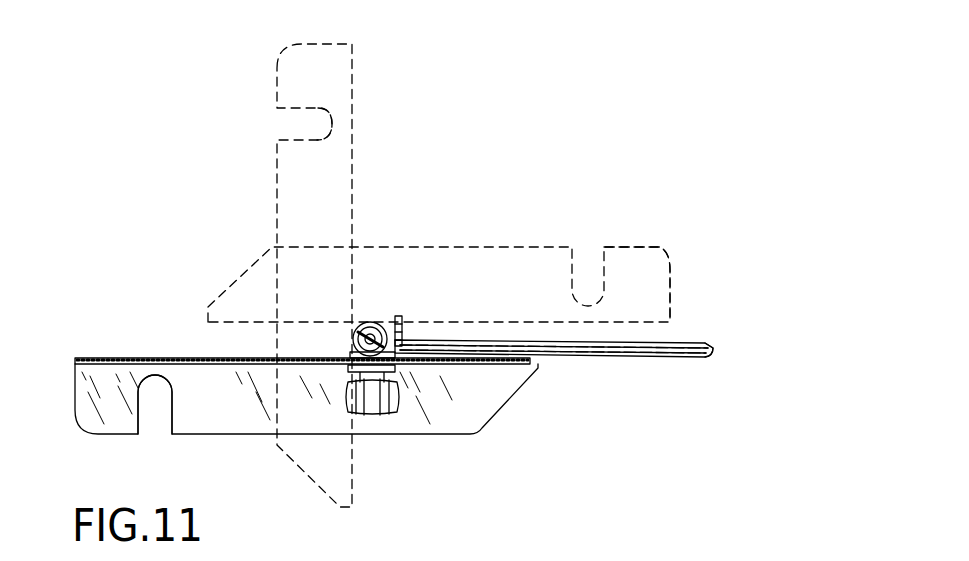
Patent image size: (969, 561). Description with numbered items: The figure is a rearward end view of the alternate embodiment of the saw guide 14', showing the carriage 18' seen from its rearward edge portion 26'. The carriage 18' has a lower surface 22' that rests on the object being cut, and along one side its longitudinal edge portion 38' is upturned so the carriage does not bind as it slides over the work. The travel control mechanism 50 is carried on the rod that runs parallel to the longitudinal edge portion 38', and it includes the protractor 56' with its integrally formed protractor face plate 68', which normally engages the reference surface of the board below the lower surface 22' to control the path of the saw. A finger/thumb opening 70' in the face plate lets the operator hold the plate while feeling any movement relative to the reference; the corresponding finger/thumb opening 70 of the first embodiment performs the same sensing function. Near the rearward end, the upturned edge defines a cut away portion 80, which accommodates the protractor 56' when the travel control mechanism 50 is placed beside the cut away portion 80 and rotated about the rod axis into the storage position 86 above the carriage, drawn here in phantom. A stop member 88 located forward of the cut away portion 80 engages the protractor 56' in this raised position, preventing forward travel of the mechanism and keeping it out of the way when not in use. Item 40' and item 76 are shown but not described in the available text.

The saw guide 14' is at (508, 135).
The carriage 18' is at (709, 382).
The lower surface 22' is at (553, 385).
The rearward edge portion 26' is at (554, 383).
The longitudinal edge portion 38' is at (393, 301).
The arm 40' is at (578, 315).
The travel control mechanism 50 is at (450, 437).
The protractor 56' is at (302, 324).
The protractor face plate 68' is at (435, 275).
The finger/thumb opening 70 is at (262, 129).
The finger/thumb opening 70' is at (113, 423).
The roller 76 is at (370, 322).
The cut away portion 80 is at (403, 342).
The storage position 86 is at (676, 252).
The stop member 88 is at (405, 318).